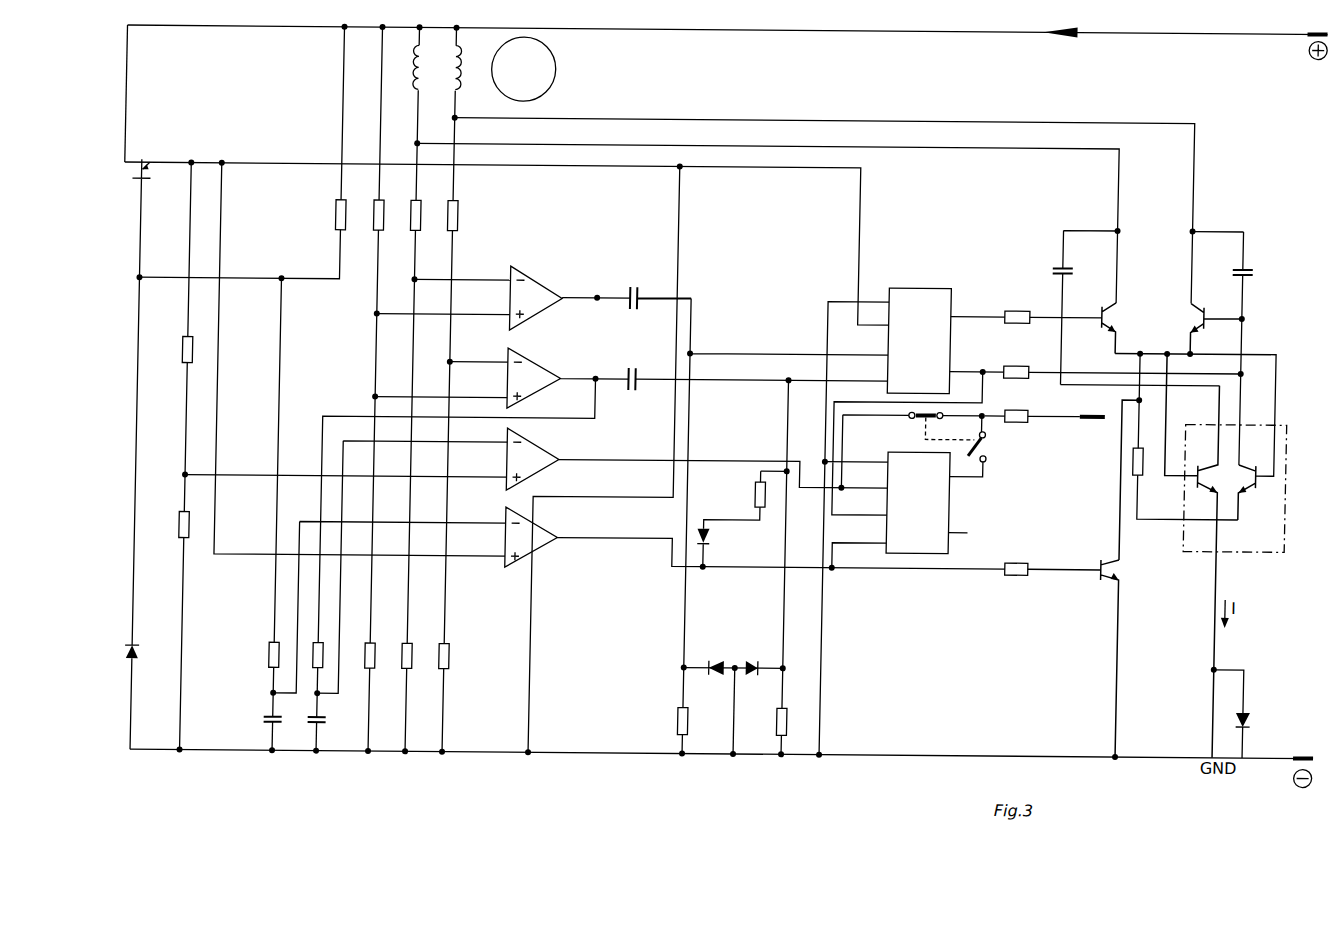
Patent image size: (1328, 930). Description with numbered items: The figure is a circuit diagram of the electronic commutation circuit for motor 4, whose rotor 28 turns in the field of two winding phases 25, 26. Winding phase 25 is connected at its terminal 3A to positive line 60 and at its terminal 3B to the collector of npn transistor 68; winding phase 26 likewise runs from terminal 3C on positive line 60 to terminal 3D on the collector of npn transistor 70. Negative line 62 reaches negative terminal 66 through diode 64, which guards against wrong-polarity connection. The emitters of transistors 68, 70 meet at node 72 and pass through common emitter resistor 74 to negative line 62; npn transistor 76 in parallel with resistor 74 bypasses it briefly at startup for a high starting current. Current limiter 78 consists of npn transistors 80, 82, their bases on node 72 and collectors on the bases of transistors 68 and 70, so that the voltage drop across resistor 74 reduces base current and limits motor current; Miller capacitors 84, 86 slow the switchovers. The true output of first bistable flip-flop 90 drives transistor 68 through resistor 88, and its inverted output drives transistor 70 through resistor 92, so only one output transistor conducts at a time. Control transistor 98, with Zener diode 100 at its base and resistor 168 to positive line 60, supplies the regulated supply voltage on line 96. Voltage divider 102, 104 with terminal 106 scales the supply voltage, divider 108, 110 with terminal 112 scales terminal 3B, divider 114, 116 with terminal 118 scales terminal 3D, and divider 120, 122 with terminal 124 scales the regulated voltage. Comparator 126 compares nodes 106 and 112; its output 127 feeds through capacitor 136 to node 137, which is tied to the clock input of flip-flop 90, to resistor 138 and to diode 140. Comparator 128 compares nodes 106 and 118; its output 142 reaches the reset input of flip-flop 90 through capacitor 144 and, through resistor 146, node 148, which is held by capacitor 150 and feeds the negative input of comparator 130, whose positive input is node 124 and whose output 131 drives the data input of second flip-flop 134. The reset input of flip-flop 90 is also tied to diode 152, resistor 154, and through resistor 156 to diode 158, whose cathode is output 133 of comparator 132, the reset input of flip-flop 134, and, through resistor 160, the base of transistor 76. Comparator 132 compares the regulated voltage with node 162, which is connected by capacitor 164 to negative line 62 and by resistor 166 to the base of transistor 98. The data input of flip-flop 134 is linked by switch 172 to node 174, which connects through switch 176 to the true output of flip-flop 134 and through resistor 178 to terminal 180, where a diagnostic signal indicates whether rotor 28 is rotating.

The terminal 3A is at (421, 24).
The terminal 3B is at (419, 140).
The terminal 3C is at (458, 24).
The terminal 3D is at (458, 114).
The motor 4 is at (437, 103).
The winding phase 25 is at (414, 60).
The winding phase 26 is at (462, 55).
The rotor 28 is at (557, 65).
The positive line 60 is at (860, 25).
The negative line 62 is at (915, 747).
The diode 64 is at (1265, 710).
The negative terminal 66 is at (1315, 745).
The npn transistor 68 is at (1116, 312).
The npn transistor 70 is at (1202, 310).
The node 72 is at (1147, 344).
The common emitter resistor 74 is at (1152, 470).
The npn transistor 76 is at (1118, 570).
The current limiter 78 is at (1295, 520).
The npn transistor 80 is at (1215, 460).
The npn transistor 82 is at (1245, 485).
The capacitor 84 is at (1060, 260).
The capacitor 86 is at (1240, 260).
The resistor 88 is at (1023, 303).
The first bistable flip-flop 90 is at (925, 281).
The resistor 92 is at (1023, 358).
The line 96 is at (540, 162).
The control transistor 98 is at (148, 157).
The Zener diode 100 is at (148, 655).
The voltage divider resistor 102 is at (380, 228).
The voltage divider resistor 104 is at (383, 640).
The terminal 106 is at (381, 311).
The voltage divider resistor 108 is at (417, 228).
The voltage divider resistor 110 is at (420, 665).
The terminal 112 is at (419, 278).
The voltage divider resistor 114 is at (455, 228).
The voltage divider resistor 116 is at (457, 652).
The terminal 118 is at (457, 357).
The voltage divider resistor 120 is at (189, 345).
The voltage divider resistor 122 is at (189, 520).
The terminal 124 is at (193, 473).
The comparator 126 is at (548, 284).
The output 127 is at (603, 291).
The comparator 128 is at (548, 364).
The comparator 130 is at (555, 440).
The output 131 is at (622, 456).
The comparator 132 is at (555, 522).
The output 133 is at (620, 534).
The second flip-flop 134 is at (960, 505).
The capacitor 136 is at (640, 282).
The node 137 is at (700, 347).
The resistor 138 is at (692, 715).
The diode 140 is at (729, 655).
The output 142 is at (638, 363).
The capacitor 144 is at (641, 386).
The resistor 146 is at (326, 648).
The node 148 is at (332, 692).
The capacitor 150 is at (312, 720).
The diode 152 is at (765, 655).
The resistor 154 is at (791, 718).
The resistor 156 is at (765, 485).
The diode 158 is at (720, 530).
The resistor 160 is at (1028, 555).
The node 162 is at (286, 690).
The capacitor 164 is at (279, 717).
The resistor 166 is at (283, 652).
The resistor 168 is at (340, 212).
The switch 172 is at (918, 410).
The node 174 is at (992, 410).
The switch 176 is at (996, 455).
The resistor 178 is at (1030, 402).
The terminal 180 is at (1100, 412).